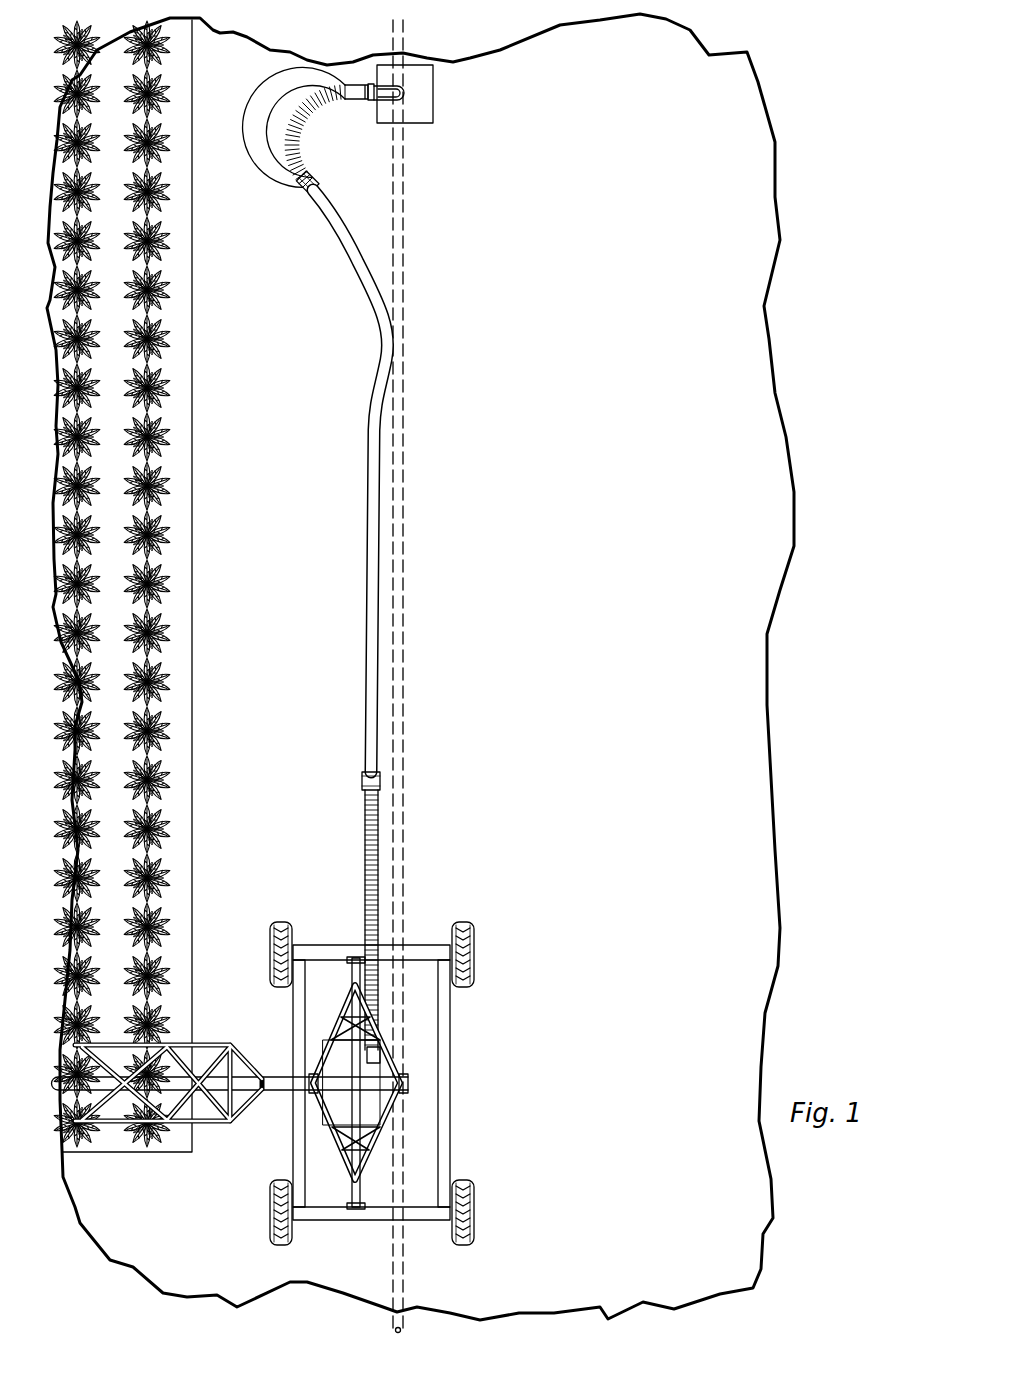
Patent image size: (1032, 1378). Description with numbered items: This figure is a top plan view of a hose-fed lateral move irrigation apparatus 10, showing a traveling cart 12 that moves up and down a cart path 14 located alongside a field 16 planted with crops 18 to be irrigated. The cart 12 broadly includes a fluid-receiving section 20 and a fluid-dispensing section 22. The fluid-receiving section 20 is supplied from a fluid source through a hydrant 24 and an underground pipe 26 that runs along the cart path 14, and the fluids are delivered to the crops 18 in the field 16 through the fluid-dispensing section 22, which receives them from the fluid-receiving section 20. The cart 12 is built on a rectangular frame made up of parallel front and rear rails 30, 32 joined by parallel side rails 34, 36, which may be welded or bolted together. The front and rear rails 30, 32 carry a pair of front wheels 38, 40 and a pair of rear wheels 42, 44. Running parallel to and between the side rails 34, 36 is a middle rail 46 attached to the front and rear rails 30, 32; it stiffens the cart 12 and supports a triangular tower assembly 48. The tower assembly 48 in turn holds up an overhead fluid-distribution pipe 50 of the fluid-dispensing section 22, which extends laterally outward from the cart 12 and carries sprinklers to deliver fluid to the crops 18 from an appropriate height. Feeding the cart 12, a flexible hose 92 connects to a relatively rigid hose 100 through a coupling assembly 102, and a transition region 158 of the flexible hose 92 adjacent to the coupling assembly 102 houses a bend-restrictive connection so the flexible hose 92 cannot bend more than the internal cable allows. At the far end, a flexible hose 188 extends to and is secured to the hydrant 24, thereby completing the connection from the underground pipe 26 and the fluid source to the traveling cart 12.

The hose-fed lateral move irrigation apparatus 10 is at (815, 652).
The traveling cart 12 is at (375, 1081).
The cart path 14 is at (688, 946).
The field 16 is at (110, 90).
The crops 18 is at (172, 233).
The fluid-receiving section 20 is at (364, 620).
The fluid-dispensing section 22 is at (230, 1065).
The hydrant 24 is at (390, 100).
The underground pipe 26 is at (406, 338).
The front rail 30 is at (333, 1221).
The rear rail 32 is at (302, 945).
The side rail 34 is at (300, 1147).
The side rail 36 is at (444, 1118).
The front wheel 38 is at (269, 1224).
The front wheel 40 is at (476, 1210).
The rear wheel 42 is at (272, 942).
The rear wheel 44 is at (476, 965).
The middle rail 46 is at (360, 1198).
The triangular tower assembly 48 is at (415, 1042).
The fluid-distribution pipe 50 is at (277, 1105).
The flexible hose 92 is at (372, 848).
The rigid hose 100 is at (376, 600).
The coupling assembly 102 is at (398, 782).
The transition region 158 is at (352, 842).
The flexible hose 188 is at (306, 104).